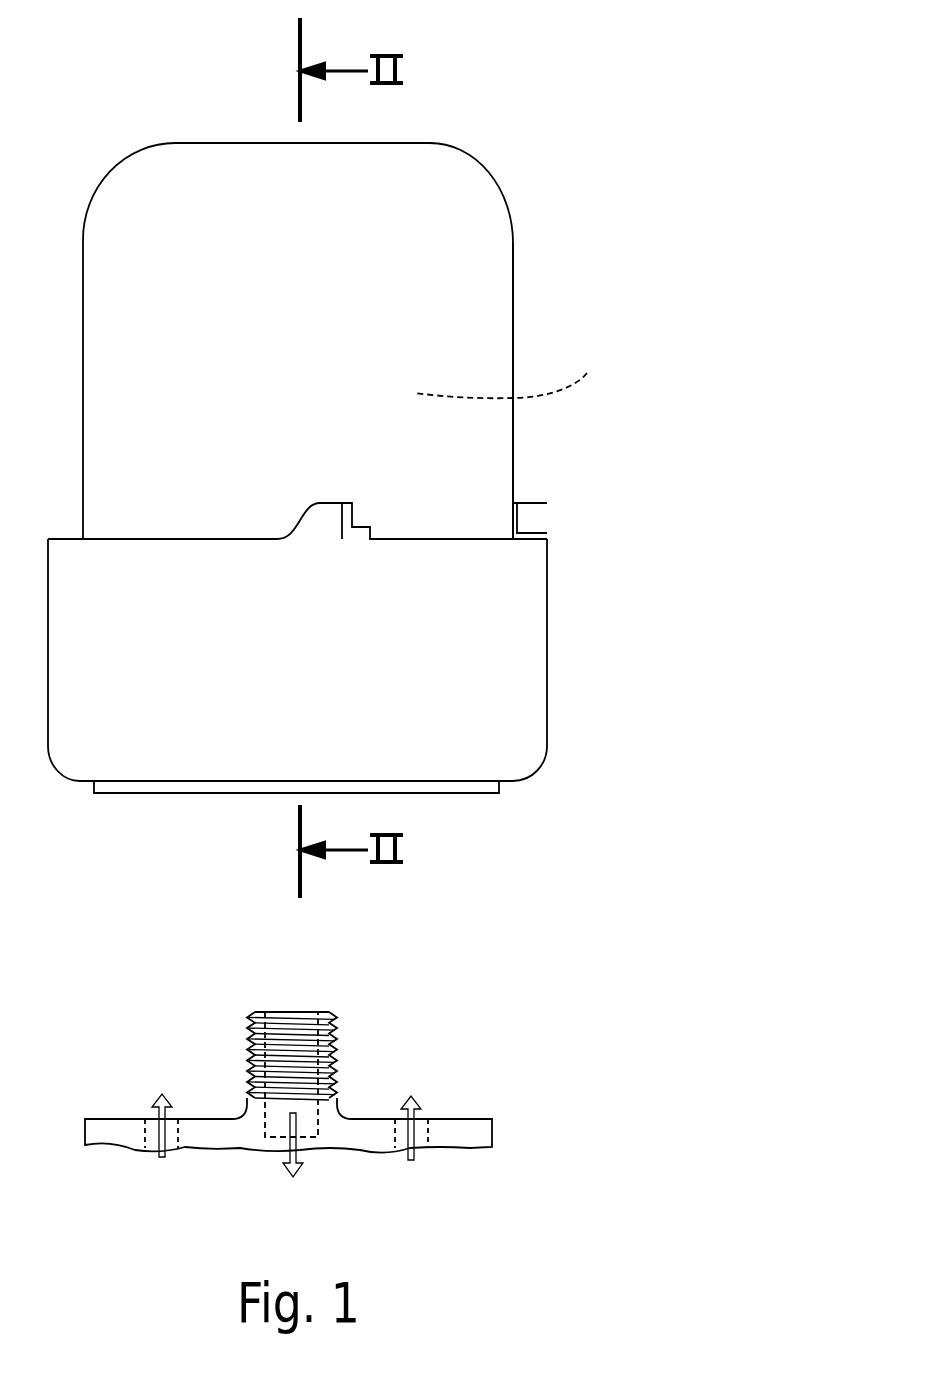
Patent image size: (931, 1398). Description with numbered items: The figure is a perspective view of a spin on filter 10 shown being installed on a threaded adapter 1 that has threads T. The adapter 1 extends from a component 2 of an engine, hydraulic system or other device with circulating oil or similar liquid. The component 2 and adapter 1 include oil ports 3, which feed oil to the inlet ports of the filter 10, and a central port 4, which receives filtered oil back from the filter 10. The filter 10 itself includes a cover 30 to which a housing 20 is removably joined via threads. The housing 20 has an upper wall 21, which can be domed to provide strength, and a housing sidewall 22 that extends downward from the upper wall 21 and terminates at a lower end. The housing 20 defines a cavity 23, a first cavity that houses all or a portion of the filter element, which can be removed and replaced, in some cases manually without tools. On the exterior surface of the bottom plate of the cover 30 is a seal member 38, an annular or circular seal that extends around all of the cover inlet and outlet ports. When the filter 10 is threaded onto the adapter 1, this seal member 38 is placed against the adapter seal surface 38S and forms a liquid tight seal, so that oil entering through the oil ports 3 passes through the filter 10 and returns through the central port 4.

The spin on filter 10 is at (541, 116).
The housing 20 is at (493, 268).
The upper wall 21 is at (430, 143).
The housing sidewall 22 is at (513, 317).
The cavity 23 is at (512, 371).
The cover 30 is at (547, 593).
The seal member 38 is at (486, 793).
The adapter seal surface 38S is at (472, 1119).
The threaded adapter 1 is at (337, 1077).
The component 2 is at (492, 1135).
The oil ports 3 is at (152, 1140).
The central port 4 is at (308, 1012).
The threads T is at (337, 1040).